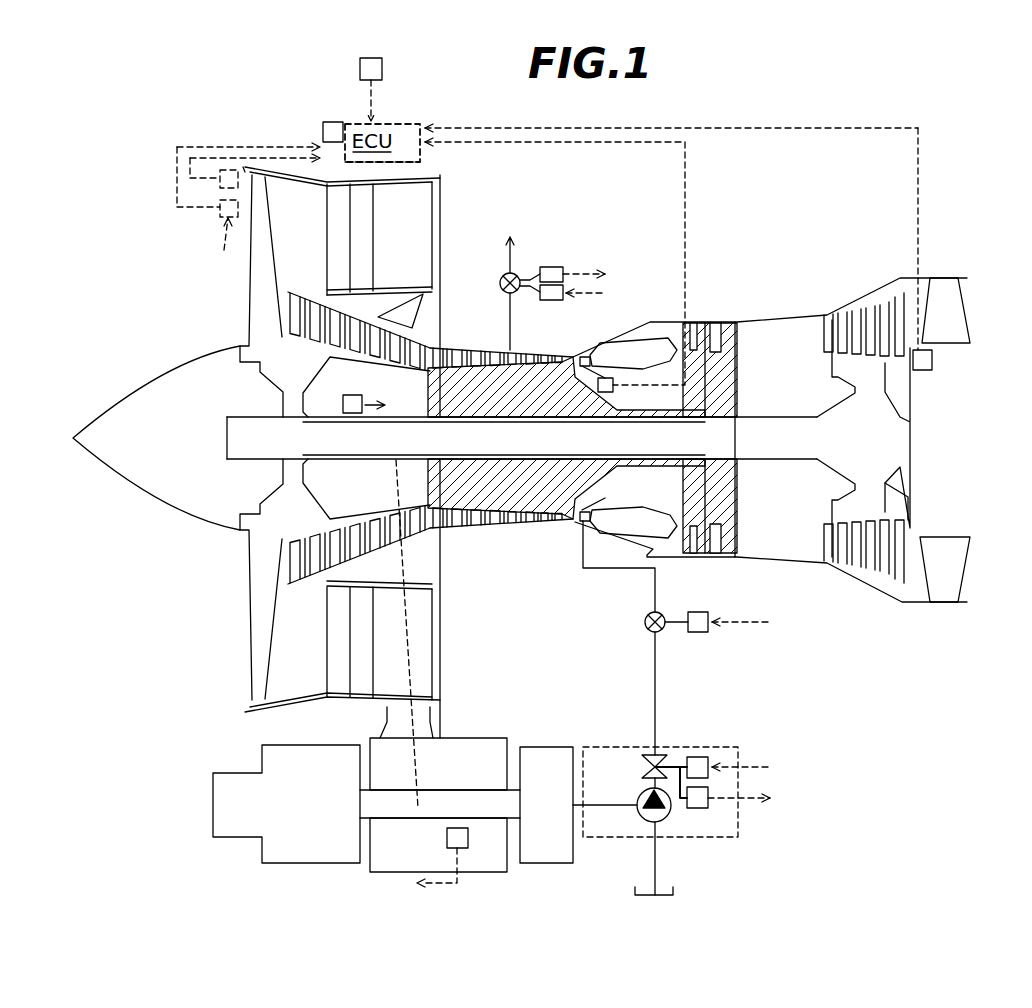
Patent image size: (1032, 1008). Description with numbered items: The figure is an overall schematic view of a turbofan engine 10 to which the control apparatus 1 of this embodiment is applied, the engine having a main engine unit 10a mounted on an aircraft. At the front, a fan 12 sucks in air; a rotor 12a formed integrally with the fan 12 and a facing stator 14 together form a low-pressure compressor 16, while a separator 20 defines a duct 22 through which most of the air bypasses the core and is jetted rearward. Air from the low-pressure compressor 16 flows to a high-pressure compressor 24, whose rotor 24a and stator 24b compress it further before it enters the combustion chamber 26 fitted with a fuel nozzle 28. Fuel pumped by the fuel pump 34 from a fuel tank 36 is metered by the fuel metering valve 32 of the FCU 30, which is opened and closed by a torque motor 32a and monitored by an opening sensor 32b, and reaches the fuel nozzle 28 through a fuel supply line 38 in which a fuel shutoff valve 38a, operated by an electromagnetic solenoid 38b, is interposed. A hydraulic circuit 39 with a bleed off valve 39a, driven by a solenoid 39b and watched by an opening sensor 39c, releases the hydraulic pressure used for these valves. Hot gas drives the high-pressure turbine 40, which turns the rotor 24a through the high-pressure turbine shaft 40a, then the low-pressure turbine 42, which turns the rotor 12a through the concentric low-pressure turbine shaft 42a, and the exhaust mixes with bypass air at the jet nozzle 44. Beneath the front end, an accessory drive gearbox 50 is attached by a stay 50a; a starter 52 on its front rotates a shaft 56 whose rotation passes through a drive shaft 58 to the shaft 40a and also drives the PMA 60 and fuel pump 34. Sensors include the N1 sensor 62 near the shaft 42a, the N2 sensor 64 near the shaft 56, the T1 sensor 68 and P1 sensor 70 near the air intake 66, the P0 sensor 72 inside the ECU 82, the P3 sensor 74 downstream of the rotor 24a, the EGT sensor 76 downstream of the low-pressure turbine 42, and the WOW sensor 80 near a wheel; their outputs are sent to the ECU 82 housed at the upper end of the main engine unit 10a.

The control apparatus 1 is at (428, 96).
The turbofan engine 10 is at (529, 219).
The main engine unit 10a is at (456, 618).
The fan 12 is at (240, 599).
The rotor 12a is at (336, 525).
The stator 14 is at (292, 580).
The low-pressure compressor 16 is at (351, 369).
The separator 20 is at (430, 302).
The duct 22 is at (388, 243).
The high-pressure compressor 24 is at (535, 536).
The rotor 24a is at (566, 382).
The stator 24b is at (503, 528).
The combustion chamber 26 is at (623, 347).
The fuel nozzle 28 is at (582, 357).
The fuel control unit 30 is at (590, 746).
The fuel metering valve 32 is at (657, 755).
The torque motor 32a is at (700, 757).
The opening sensor 32b is at (702, 810).
The fuel pump 34 is at (640, 797).
The fuel tank 36 is at (632, 894).
The fuel supply line 38 is at (654, 660).
The fuel shutoff valve 38a is at (648, 614).
The electromagnetic solenoid 38b is at (710, 630).
The hydraulic circuit 39 is at (498, 303).
The bleed off valve 39a is at (503, 277).
The electromagnetic solenoid 39b is at (557, 300).
The opening sensor 39c is at (555, 267).
The high-pressure turbine 40 is at (738, 360).
The high-pressure turbine shaft 40a is at (394, 462).
The low-pressure turbine 42 is at (835, 378).
The low-pressure turbine shaft 42a is at (503, 451).
The jet nozzle 44 is at (955, 393).
The accessory drive gearbox 50 is at (454, 728).
The stay 50a is at (380, 712).
The integrated starter/generator 52 is at (288, 817).
The shaft 56 is at (392, 823).
The drive shaft 58 is at (420, 770).
The permanent magnet alternator 60 is at (534, 817).
The N1 sensor 62 is at (343, 404).
The N2 sensor 64 is at (468, 838).
The air intake 66 is at (243, 167).
The T1 sensor 68 is at (218, 168).
The P1 sensor 70 is at (222, 246).
The P0 sensor 72 is at (323, 130).
The P3 sensor 74 is at (614, 388).
The EGT sensor 76 is at (933, 360).
The WOW sensor 80 is at (360, 69).
The electronic control unit 82 is at (423, 156).